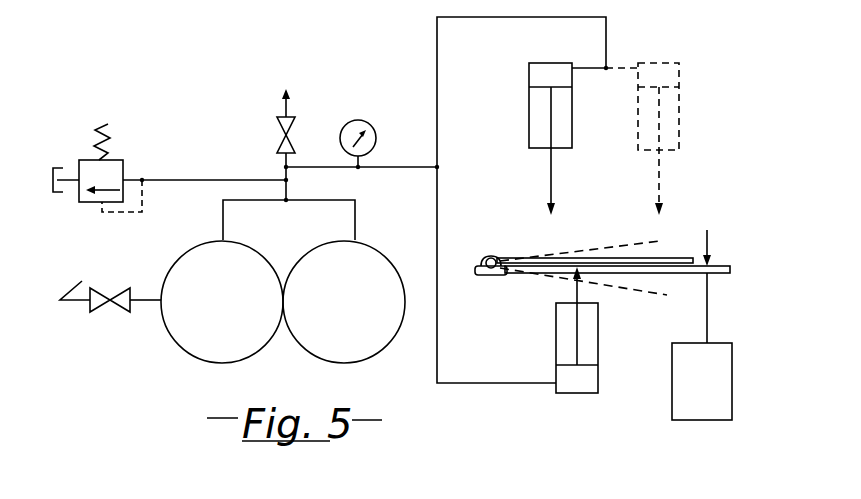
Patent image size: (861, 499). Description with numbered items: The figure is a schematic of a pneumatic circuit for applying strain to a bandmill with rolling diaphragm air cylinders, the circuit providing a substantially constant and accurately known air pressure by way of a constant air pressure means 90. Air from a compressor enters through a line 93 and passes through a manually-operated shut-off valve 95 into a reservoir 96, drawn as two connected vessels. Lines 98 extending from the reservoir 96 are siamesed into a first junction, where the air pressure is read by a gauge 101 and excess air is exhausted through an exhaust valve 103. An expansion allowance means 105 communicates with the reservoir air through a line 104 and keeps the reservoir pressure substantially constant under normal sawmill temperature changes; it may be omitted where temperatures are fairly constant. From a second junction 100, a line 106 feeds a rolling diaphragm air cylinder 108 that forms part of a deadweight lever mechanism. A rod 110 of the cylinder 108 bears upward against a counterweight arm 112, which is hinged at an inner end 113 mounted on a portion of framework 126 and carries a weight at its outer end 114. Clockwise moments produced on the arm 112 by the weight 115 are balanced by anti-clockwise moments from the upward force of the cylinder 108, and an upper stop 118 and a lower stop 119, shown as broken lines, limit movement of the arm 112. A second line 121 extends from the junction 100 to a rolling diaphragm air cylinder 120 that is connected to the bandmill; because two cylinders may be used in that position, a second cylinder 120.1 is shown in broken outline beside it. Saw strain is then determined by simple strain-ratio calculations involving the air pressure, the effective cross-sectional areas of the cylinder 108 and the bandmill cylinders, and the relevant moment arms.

The constant air pressure means 90 is at (312, 119).
The line 93 is at (70, 281).
The manually-operated shut-off valve 95 is at (110, 303).
The reservoir 96 is at (277, 346).
The lines 98 is at (223, 222).
The second junction 100 is at (437, 167).
The gauge 101 is at (373, 122).
The exhaust valve 103 is at (277, 135).
The line 104 is at (162, 180).
The expansion allowance means 105 is at (120, 150).
The line 106 is at (437, 340).
The rolling diaphragm air cylinder 108 is at (598, 352).
The rod 110 is at (577, 288).
The counterweight arm 112 is at (547, 244).
The inner end 113 is at (491, 257).
The outer end 114 is at (713, 263).
The weight 115 is at (672, 398).
The upper stop 118 is at (643, 236).
The lower stop 119 is at (657, 315).
The rolling diaphragm air cylinder 120 is at (529, 118).
The second cylinder 120.1 is at (673, 127).
The second line 121 is at (438, 68).
The portion of framework 126 is at (490, 277).